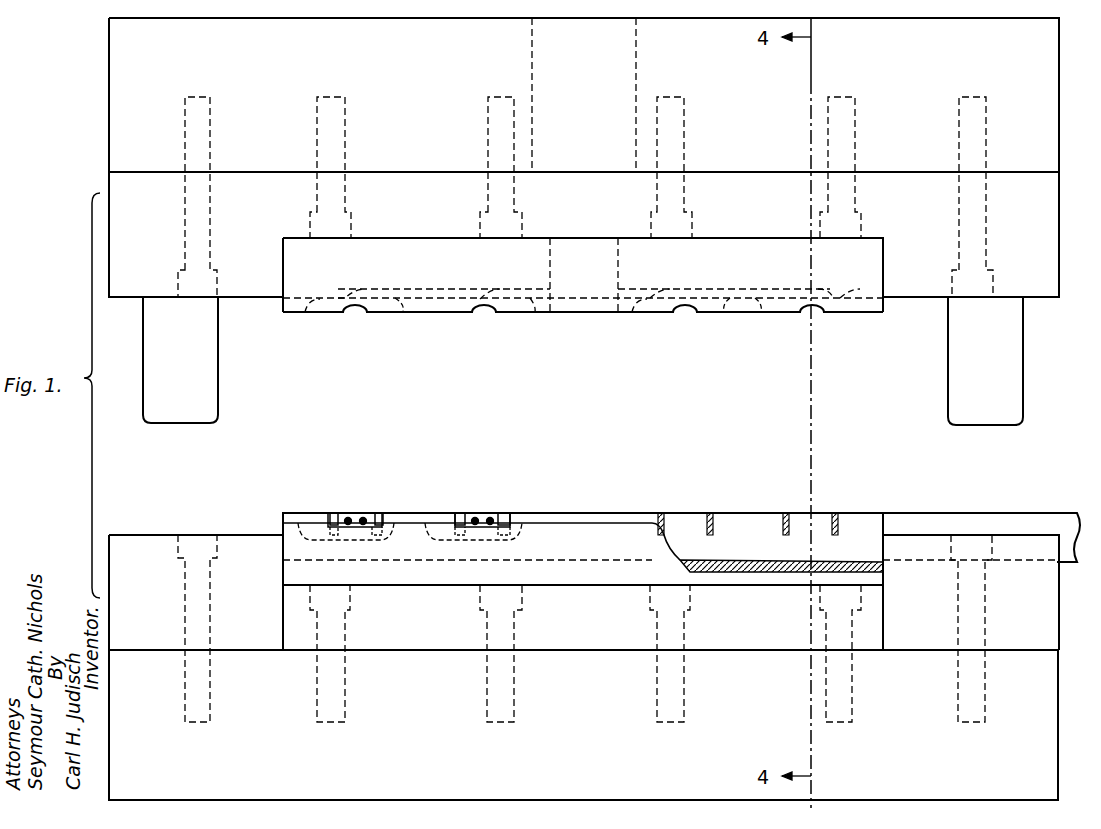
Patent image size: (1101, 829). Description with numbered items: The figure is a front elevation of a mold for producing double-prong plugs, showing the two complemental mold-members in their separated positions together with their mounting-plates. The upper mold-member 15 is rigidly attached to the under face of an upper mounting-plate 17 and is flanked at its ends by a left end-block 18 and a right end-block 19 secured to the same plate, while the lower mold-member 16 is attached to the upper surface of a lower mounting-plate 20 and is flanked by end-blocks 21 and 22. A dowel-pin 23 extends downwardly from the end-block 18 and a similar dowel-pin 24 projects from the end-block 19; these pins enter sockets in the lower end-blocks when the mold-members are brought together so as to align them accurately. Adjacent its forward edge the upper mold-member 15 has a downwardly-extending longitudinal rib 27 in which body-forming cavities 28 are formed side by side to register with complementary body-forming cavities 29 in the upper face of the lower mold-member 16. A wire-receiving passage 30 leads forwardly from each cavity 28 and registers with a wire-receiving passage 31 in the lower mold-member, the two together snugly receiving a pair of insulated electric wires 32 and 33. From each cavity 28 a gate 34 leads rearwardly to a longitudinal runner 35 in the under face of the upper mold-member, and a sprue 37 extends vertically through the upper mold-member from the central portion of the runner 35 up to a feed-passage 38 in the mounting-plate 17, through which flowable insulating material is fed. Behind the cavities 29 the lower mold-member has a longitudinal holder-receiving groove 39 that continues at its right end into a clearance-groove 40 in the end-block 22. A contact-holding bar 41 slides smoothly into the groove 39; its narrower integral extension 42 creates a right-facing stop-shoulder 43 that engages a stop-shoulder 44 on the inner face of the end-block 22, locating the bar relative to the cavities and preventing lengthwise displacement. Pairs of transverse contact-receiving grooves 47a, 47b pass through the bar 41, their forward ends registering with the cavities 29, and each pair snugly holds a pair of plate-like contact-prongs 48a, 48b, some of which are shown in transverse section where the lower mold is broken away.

The upper mold-member 15 is at (586, 290).
The lower mold-member 16 is at (585, 540).
The upper mounting-plate 17 is at (599, 70).
The left end-block 18 is at (162, 226).
The right end-block 19 is at (1050, 226).
The lower mounting-plate 20 is at (598, 762).
The end-block 21 is at (138, 537).
The end-block 22 is at (1050, 628).
The dowel-pin 23 is at (218, 412).
The dowel-pin 24 is at (1023, 412).
The longitudinal rib 27 is at (886, 314).
The body-forming cavities 28 is at (435, 312).
The body-forming cavities 29 is at (432, 524).
The wire-receiving passage 30 is at (355, 312).
The wire-receiving passage 31 is at (354, 520).
The insulated electric wire 32 is at (348, 525).
The insulated electric wire 33 is at (363, 525).
The gates 34 is at (368, 289).
The runner 35 is at (424, 289).
The sprue 37 is at (618, 262).
The feed-passage 38 is at (636, 78).
The holder-receiving groove 39 is at (580, 560).
The clearance-groove 40 is at (924, 560).
The contact-holding bar 41 is at (760, 512).
The integral extension 42 is at (1002, 512).
The stop-shoulder 43 is at (893, 514).
The stop-shoulder 44 is at (883, 546).
The contact-receiving groove 47a is at (334, 513).
The contact-receiving groove 47b is at (380, 513).
The contact-prong 48a is at (330, 524).
The contact-prong 48b is at (386, 535).